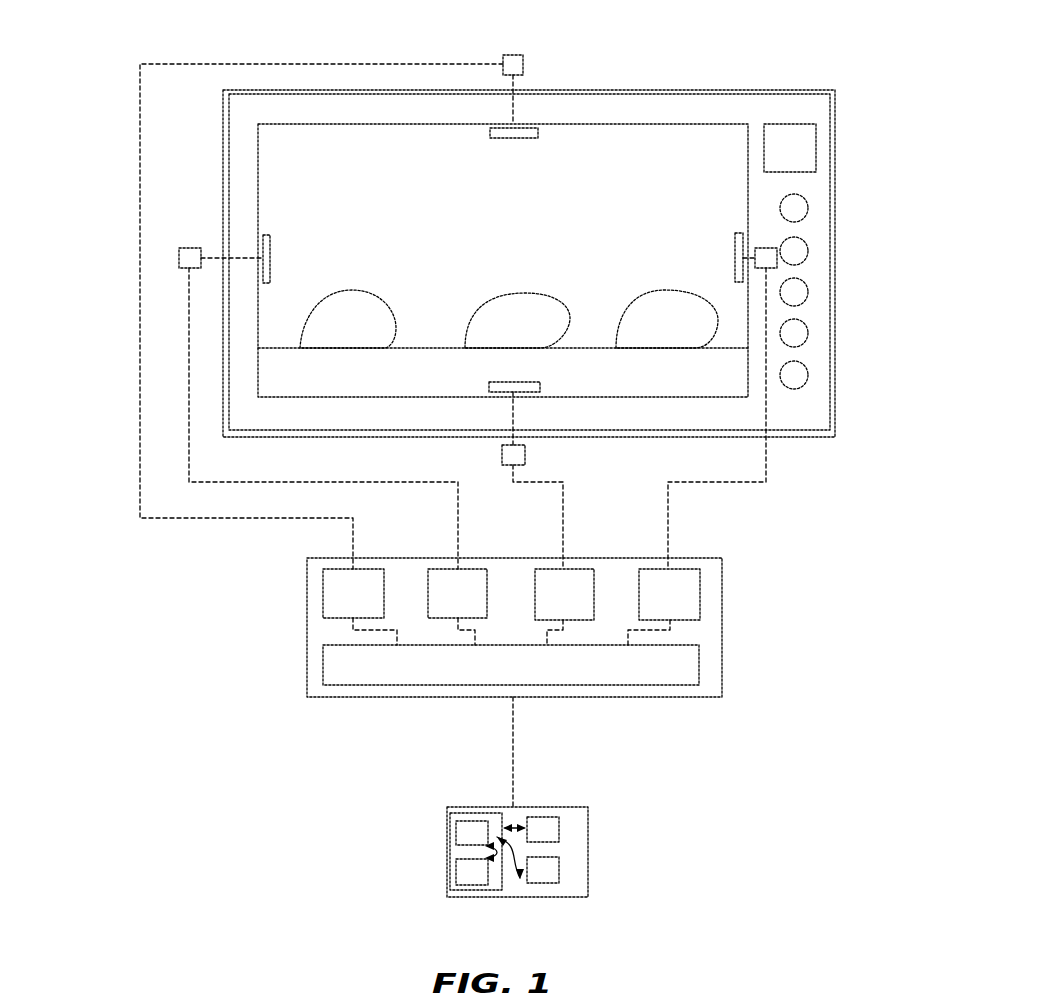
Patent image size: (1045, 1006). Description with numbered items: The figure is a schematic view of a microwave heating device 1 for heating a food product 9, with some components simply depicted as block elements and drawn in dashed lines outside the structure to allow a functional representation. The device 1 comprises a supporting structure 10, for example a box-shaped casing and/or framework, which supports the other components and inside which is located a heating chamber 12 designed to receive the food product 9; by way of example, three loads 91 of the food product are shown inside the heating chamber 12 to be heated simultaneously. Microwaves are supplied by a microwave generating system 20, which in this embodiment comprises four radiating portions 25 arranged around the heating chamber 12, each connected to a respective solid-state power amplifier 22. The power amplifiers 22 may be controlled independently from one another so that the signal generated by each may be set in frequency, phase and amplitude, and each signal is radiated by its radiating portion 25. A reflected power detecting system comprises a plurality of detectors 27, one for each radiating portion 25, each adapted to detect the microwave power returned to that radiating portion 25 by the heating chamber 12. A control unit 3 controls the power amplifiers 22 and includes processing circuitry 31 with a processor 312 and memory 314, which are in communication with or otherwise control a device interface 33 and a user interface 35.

The microwave heating device 1 is at (870, 73).
The supporting structure 10 is at (672, 94).
The heating chamber 12 is at (350, 199).
The product 9 is at (306, 307).
The loads 91 is at (491, 266).
The radiating portions 25 is at (505, 133).
The detectors 27 is at (508, 65).
The microwave generating system 20 is at (742, 613).
The solid-state power amplifiers 22 is at (657, 605).
The control unit 3 is at (597, 850).
The processing circuitry 31 is at (450, 863).
The processor 312 is at (468, 838).
The memory 314 is at (477, 868).
The device interface 33 is at (543, 830).
The user interface 35 is at (547, 870).